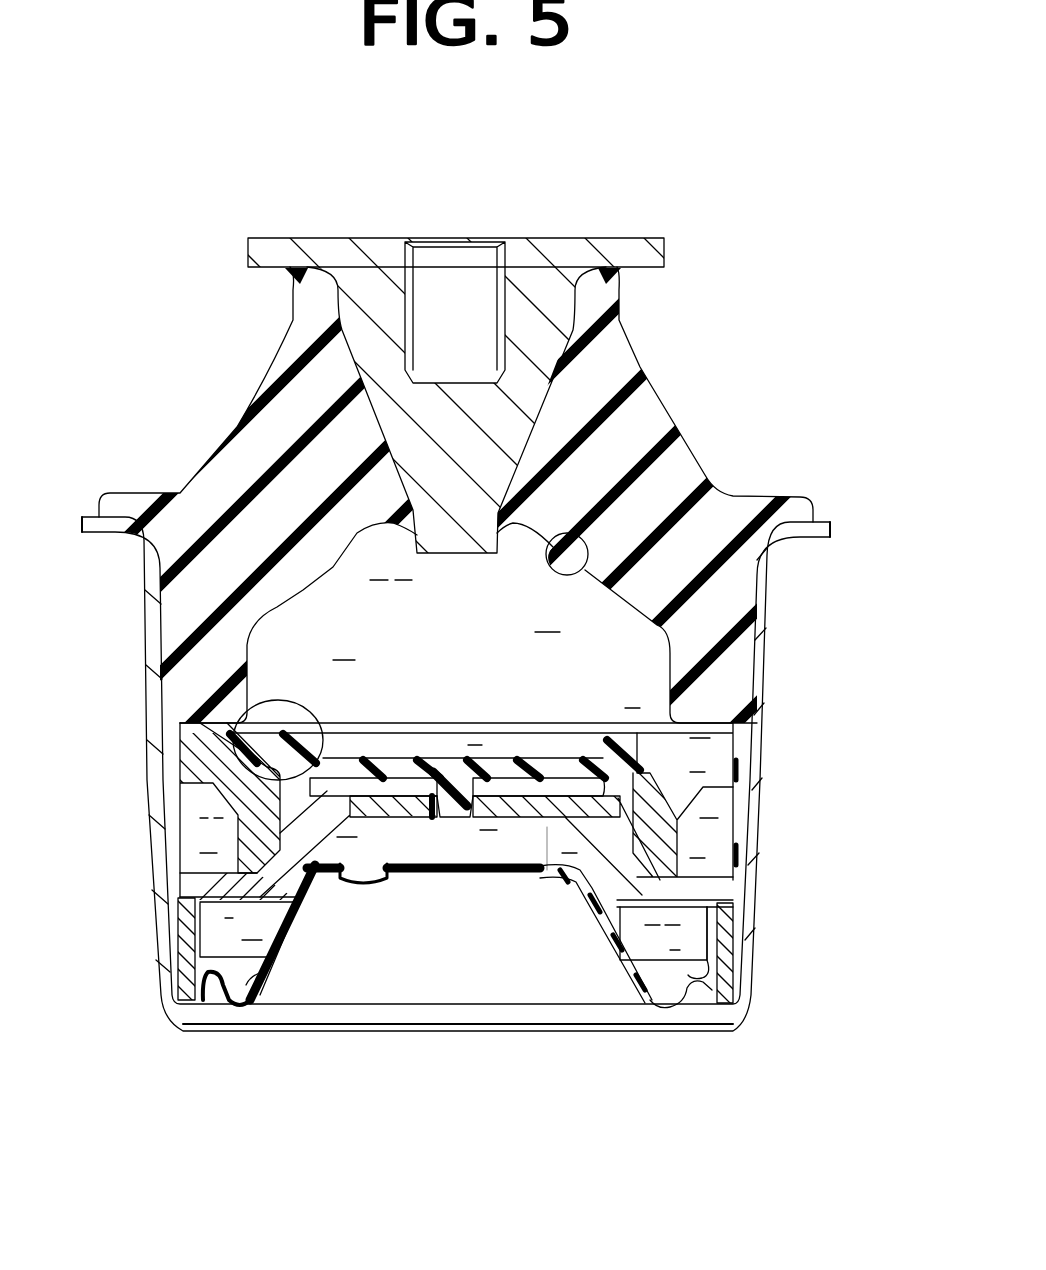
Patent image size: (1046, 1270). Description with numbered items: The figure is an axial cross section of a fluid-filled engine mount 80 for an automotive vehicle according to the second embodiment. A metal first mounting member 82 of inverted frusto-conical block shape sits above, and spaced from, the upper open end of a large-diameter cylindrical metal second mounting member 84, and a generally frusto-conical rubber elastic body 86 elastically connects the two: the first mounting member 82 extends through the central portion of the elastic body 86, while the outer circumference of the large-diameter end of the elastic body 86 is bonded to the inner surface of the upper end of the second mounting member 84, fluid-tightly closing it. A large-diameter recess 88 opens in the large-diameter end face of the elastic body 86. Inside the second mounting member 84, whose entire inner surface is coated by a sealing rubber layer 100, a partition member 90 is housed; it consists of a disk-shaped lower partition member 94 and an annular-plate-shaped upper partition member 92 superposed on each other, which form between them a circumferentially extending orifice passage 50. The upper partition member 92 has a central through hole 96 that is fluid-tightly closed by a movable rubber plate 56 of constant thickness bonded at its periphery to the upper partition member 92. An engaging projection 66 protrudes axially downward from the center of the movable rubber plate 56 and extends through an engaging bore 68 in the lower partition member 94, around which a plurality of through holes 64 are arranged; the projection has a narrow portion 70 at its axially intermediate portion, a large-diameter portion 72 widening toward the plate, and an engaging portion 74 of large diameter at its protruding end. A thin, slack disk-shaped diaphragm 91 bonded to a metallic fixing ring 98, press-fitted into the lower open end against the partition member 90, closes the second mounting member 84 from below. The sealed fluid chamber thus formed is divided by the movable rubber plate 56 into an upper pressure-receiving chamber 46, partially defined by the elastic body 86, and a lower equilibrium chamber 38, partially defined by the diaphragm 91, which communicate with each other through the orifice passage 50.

The engine mount 80 is at (678, 131).
The first mounting member 82 is at (538, 362).
The elastic body 86 is at (252, 448).
The large-diameter recess 88 is at (590, 555).
The pressure-receiving chamber 46 is at (333, 603).
The second mounting member 84 is at (765, 635).
The through hole 96 is at (236, 718).
The movable rubber plate 56 is at (540, 767).
The upper partition member 92 is at (195, 768).
The orifice passage 50 is at (193, 817).
The large-diameter portion 72 is at (506, 778).
The narrow portion 70 is at (440, 858).
The engaging projection 66 is at (421, 826).
The through holes 64 is at (350, 795).
The engaging bore 68 is at (432, 847).
The sealing rubber layer 100 is at (745, 842).
The fixing ring 98 is at (188, 930).
The diaphragm 91 is at (290, 937).
The lower partition member 94 is at (297, 830).
The engaging portion 74 is at (473, 867).
The partition member 90 is at (547, 824).
The equilibrium chamber 38 is at (660, 940).